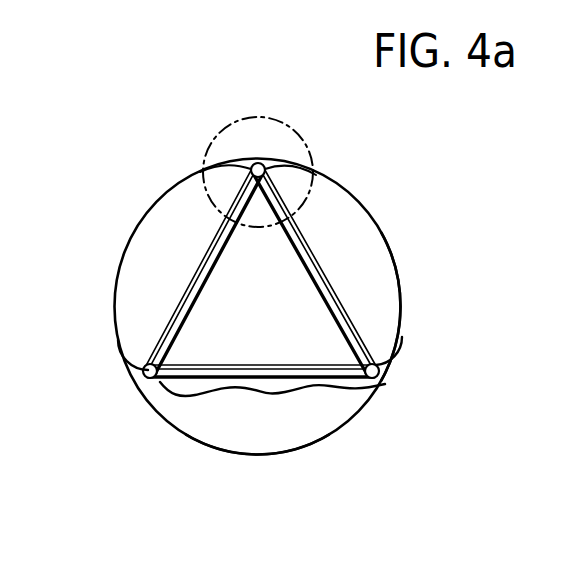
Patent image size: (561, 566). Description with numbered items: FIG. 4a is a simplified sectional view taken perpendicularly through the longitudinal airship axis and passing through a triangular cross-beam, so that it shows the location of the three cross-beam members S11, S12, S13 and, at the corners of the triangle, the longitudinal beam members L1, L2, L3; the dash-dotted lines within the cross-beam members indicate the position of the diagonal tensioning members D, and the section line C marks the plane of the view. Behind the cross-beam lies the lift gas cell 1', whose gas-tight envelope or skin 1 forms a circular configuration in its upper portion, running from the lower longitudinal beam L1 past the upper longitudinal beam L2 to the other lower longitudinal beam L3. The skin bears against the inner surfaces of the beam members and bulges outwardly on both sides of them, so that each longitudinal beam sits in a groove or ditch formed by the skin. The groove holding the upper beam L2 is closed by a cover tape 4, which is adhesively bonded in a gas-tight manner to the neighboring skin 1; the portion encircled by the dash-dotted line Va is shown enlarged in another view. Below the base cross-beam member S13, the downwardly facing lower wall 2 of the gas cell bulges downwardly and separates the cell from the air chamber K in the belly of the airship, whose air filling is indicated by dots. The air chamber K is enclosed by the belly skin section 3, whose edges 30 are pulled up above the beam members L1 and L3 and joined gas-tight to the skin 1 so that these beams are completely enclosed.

The skin of the gas cells 1 is at (225, 307).
The lift gas cell 1' is at (415, 307).
The lower skin section 2 is at (193, 392).
The belly skin section 3 is at (213, 451).
The cover tape 4 is at (205, 157).
The edges of the belly skin 30 is at (118, 351).
The cross-beam member S11 is at (200, 262).
The cross-beam member S12 is at (316, 245).
The base cross-beam member S13 is at (168, 383).
The longitudinal beam member L1 is at (145, 372).
The upper longitudinal beam member L2 is at (266, 166).
The longitudinal beam member L3 is at (378, 378).
The diagonal tensioning members D is at (257, 365).
The air chamber K is at (283, 432).
The dash-dotted encircling line Va is at (232, 118).
The section line C- C is at (303, 83).